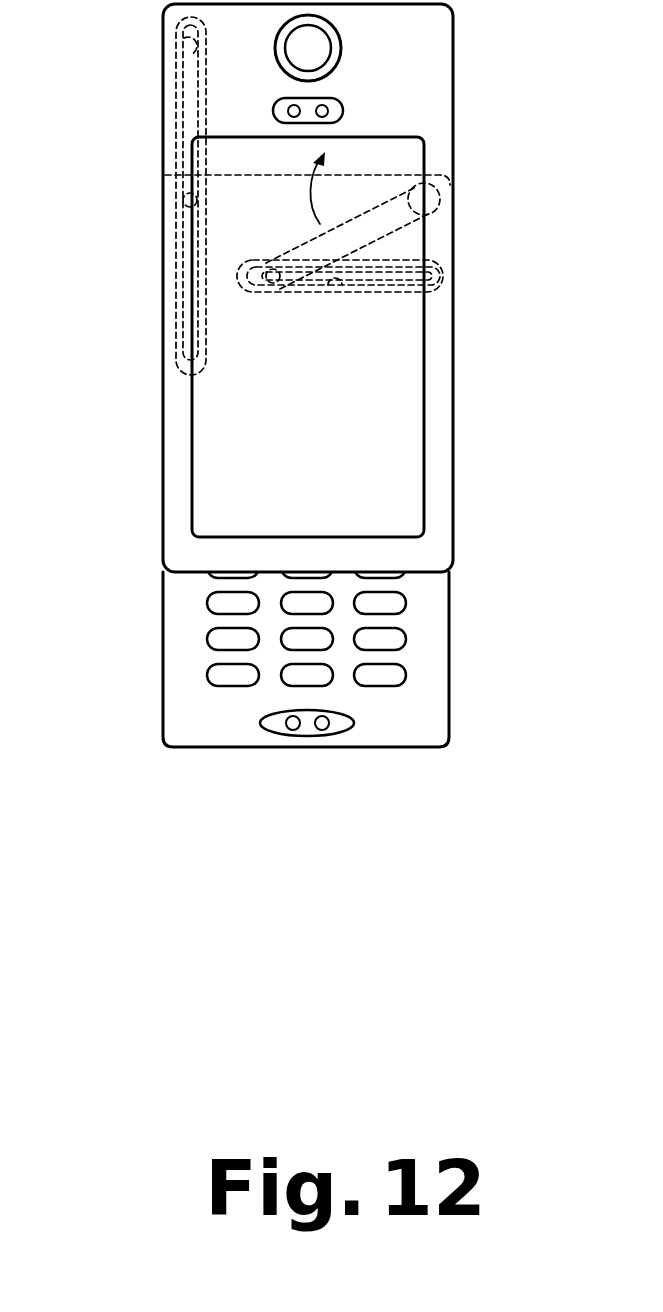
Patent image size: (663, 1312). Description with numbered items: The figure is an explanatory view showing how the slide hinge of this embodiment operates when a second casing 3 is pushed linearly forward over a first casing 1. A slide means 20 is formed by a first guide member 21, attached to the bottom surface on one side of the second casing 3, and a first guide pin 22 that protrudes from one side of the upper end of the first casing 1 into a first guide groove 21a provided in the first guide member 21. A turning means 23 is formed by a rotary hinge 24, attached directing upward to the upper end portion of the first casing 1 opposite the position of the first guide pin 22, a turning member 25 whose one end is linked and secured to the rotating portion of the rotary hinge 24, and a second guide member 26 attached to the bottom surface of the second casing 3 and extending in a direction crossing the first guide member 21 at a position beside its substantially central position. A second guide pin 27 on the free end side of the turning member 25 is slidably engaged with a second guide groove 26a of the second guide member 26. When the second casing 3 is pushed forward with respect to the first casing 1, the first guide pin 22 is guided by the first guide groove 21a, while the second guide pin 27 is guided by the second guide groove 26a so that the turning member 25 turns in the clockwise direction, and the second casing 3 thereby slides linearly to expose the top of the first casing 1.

The first casing 1 is at (185, 699).
The second casing 3 is at (437, 328).
The slide means 20 is at (250, 196).
The first guide member 21 is at (176, 92).
The first guide groove 21a is at (176, 60).
The first guide pin 22 is at (190, 193).
The turning means 23 is at (382, 249).
The rotary hinge 24 is at (440, 196).
The turning member 25 is at (372, 208).
The second guide member 26 is at (403, 291).
The second guide groove 26a is at (343, 290).
The second guide pin 27 is at (273, 288).